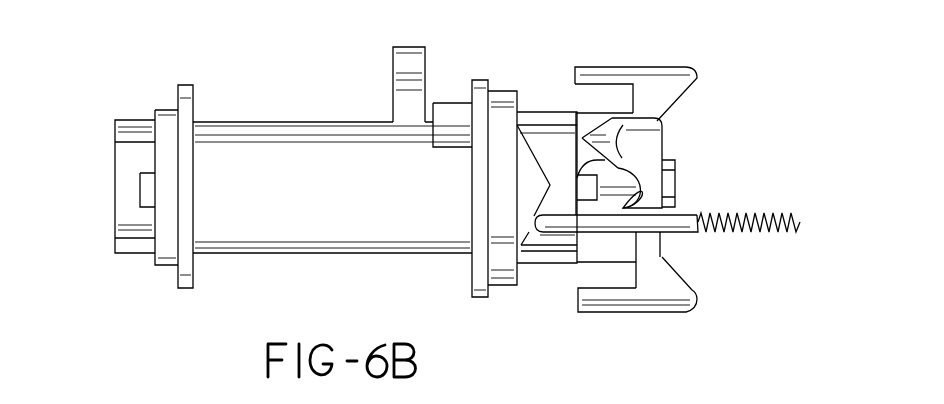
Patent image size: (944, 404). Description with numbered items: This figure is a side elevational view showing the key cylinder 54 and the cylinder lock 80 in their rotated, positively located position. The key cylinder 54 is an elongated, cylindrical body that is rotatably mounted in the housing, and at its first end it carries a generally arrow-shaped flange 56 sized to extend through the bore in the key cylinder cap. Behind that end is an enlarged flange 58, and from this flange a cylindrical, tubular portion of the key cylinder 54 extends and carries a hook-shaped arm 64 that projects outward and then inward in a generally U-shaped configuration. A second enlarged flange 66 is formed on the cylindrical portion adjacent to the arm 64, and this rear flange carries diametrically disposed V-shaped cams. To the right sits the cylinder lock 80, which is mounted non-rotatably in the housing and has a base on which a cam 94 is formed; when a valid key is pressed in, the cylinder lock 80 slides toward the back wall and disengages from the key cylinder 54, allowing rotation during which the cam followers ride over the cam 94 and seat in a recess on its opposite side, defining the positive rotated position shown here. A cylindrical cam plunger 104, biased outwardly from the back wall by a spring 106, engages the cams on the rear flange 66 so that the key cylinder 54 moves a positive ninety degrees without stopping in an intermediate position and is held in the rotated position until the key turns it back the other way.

The key cylinder 54 is at (273, 91).
The arrow-shaped flange 56 is at (115, 153).
The enlarged flange 58 is at (180, 277).
The hook-shaped arm 64 is at (397, 70).
The second enlarged flange 66 is at (478, 273).
The cylinder lock 80 is at (650, 318).
The cam 94 is at (622, 157).
The cam plunger 104 is at (700, 230).
The spring 106 is at (735, 216).